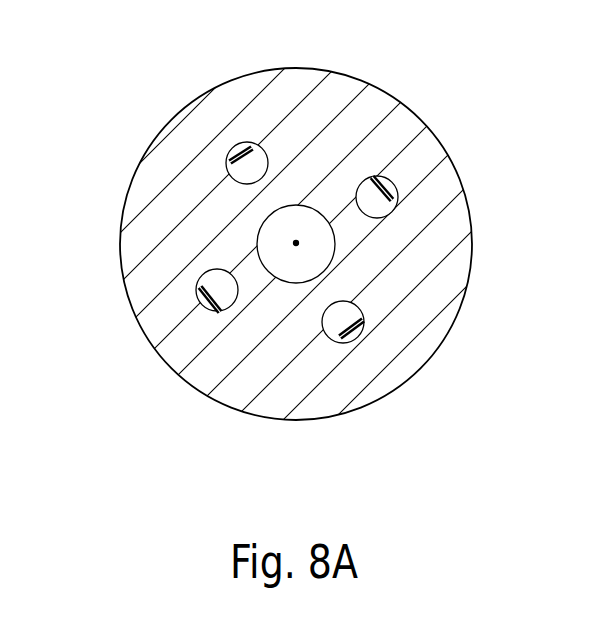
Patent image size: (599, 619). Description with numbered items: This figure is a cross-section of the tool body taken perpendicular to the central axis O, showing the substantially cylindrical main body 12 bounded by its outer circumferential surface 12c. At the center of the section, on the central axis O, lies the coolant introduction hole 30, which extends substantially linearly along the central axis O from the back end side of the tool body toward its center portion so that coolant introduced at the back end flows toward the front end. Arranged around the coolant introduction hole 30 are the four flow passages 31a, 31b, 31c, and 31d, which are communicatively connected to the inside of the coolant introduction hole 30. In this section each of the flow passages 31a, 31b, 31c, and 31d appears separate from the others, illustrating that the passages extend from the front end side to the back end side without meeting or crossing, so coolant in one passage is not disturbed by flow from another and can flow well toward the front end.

The main body 12 is at (163, 128).
The outer circumferential surface 12c is at (121, 217).
The coolant introduction hole 30 is at (302, 268).
The central axis O is at (296, 244).
The flow passage 31a is at (260, 167).
The flow passage 31b is at (376, 205).
The flow passage 31c is at (344, 312).
The flow passage 31d is at (221, 281).